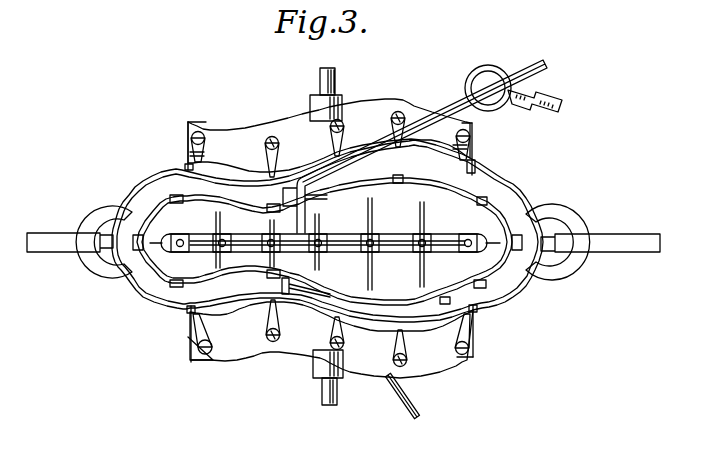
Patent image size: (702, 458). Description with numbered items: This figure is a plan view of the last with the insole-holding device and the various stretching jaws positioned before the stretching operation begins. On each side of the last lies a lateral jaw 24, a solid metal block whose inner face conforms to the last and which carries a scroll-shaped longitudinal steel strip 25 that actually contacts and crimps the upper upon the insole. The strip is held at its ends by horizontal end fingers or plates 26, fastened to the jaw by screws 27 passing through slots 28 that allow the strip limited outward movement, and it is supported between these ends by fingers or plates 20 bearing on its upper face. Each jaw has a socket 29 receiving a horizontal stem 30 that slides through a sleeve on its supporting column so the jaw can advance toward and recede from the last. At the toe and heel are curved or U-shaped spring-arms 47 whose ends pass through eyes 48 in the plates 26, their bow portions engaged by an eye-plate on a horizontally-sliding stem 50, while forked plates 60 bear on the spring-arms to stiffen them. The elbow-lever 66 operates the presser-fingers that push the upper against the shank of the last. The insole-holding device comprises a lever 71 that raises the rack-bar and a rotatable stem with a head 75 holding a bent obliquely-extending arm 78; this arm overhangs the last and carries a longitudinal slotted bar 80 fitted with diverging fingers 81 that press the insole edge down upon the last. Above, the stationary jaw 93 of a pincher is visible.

The fingers or plates 20 is at (279, 331).
The lateral jaw 24 is at (330, 238).
The longitudinal steel strip 25 is at (324, 248).
The end fingers or plates 26 is at (190, 153).
The screws 27 is at (473, 127).
The slots 28 is at (470, 146).
The socket 29 is at (312, 364).
The horizontal stem 30 is at (339, 236).
The spring-arms 47 is at (327, 231).
The eyes 48 is at (333, 242).
The horizontally-sliding stem 50 is at (343, 234).
The forked plates 60 is at (326, 247).
The elbow-lever 66 is at (412, 398).
The lever 71 is at (535, 99).
The head 75 is at (488, 88).
The bent obliquely-extending arm 78 is at (415, 146).
The longitudinal slotted bar 80 is at (390, 234).
The diverging fingers 81 is at (324, 231).
The stationary jaw 93 is at (327, 239).